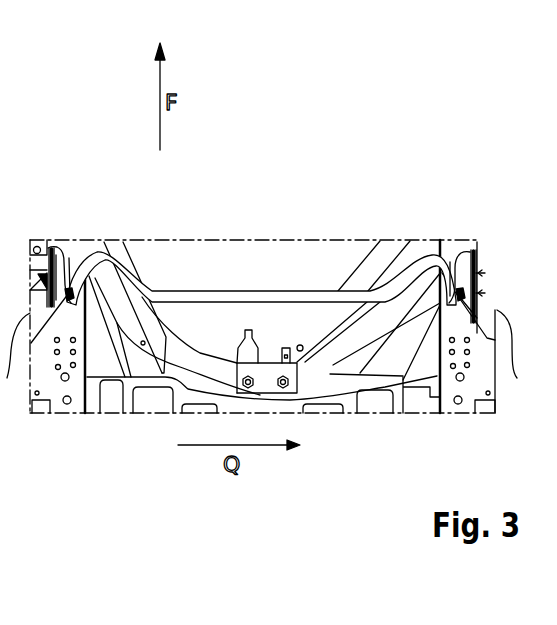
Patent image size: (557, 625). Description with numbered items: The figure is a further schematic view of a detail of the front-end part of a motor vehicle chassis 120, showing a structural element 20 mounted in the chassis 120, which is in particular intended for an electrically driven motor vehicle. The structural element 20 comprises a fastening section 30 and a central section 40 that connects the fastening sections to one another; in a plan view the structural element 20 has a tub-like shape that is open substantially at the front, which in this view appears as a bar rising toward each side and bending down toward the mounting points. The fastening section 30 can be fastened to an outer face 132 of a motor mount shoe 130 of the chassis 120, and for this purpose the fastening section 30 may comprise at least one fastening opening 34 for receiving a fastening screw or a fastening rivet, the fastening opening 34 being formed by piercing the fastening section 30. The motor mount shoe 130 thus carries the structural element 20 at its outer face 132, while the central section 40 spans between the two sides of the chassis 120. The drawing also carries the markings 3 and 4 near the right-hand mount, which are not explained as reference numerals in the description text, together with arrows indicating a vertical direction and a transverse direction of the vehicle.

The bearing 3 is at (460, 261).
The vehicle body 4 is at (500, 287).
The structural element 20 is at (223, 289).
The fastening section 30 is at (82, 255).
The fastening opening 34 is at (60, 252).
The central section 40 is at (282, 290).
The chassis 120 is at (114, 252).
The motor mount shoe 130 is at (448, 310).
The outer face 132 is at (272, 361).